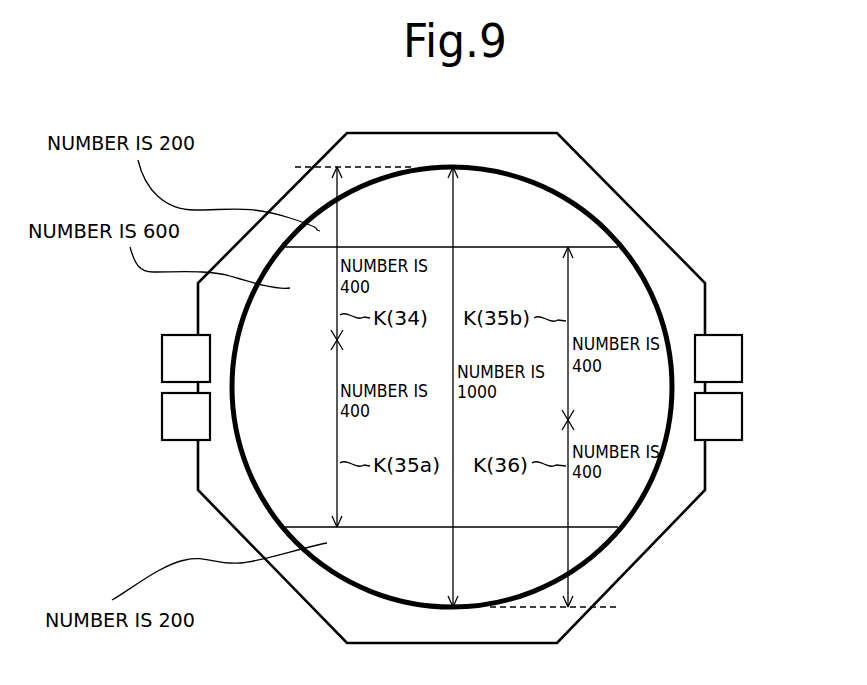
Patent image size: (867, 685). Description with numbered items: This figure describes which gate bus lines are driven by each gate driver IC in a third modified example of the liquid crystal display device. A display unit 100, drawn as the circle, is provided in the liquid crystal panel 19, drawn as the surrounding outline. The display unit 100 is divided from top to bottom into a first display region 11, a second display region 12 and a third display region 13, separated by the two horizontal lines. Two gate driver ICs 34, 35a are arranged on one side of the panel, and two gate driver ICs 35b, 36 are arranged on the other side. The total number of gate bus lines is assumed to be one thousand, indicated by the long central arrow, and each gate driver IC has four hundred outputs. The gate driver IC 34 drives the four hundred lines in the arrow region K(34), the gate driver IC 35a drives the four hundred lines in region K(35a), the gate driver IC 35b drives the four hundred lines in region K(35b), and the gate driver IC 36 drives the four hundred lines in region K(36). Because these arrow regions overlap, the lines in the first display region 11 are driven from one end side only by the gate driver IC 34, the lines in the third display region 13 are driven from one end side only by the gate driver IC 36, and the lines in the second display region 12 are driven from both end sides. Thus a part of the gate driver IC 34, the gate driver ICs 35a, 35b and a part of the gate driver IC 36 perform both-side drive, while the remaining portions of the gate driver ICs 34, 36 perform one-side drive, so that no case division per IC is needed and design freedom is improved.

The liquid crystal panel 19 is at (450, 132).
The display unit 100 is at (470, 167).
The first display region 11 is at (530, 232).
The second display region 12 is at (613, 288).
The third display region 13 is at (580, 543).
The gate driver IC 34 is at (162, 364).
The gate driver IC 35a is at (162, 422).
The gate driver IC 35b is at (742, 352).
The gate driver IC 36 is at (742, 412).